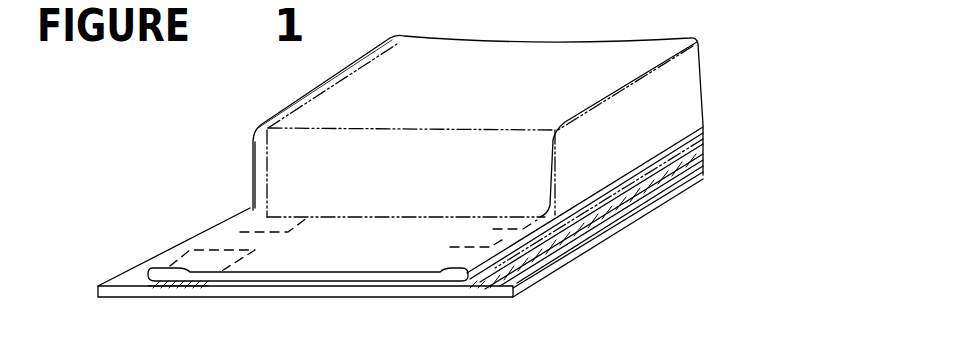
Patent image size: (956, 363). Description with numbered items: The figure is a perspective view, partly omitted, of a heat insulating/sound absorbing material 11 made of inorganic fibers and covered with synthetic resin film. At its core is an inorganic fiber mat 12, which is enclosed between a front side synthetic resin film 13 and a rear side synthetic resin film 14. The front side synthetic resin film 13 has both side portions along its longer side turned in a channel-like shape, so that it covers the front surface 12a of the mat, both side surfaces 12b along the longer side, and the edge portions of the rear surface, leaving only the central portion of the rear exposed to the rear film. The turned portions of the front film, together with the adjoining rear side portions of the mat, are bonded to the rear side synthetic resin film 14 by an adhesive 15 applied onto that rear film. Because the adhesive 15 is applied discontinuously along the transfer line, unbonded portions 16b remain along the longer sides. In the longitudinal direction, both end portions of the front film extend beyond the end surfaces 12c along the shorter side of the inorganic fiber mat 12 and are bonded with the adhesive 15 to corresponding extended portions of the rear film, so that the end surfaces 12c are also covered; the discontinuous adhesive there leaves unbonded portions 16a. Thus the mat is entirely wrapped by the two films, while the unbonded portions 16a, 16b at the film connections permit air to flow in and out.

The heat insulating/sound absorbing material 11 is at (238, 147).
The inorganic fiber mat 12 is at (663, 112).
The front surface 12a is at (323, 108).
The side surfaces 12b is at (603, 163).
The end surfaces 12c is at (515, 268).
The front side synthetic resin film 13 is at (260, 186).
The rear side synthetic resin film 14 is at (675, 172).
The adhesive 15 is at (458, 284).
The unbonded portions 16a is at (297, 287).
The unbonded portions 16b is at (550, 237).